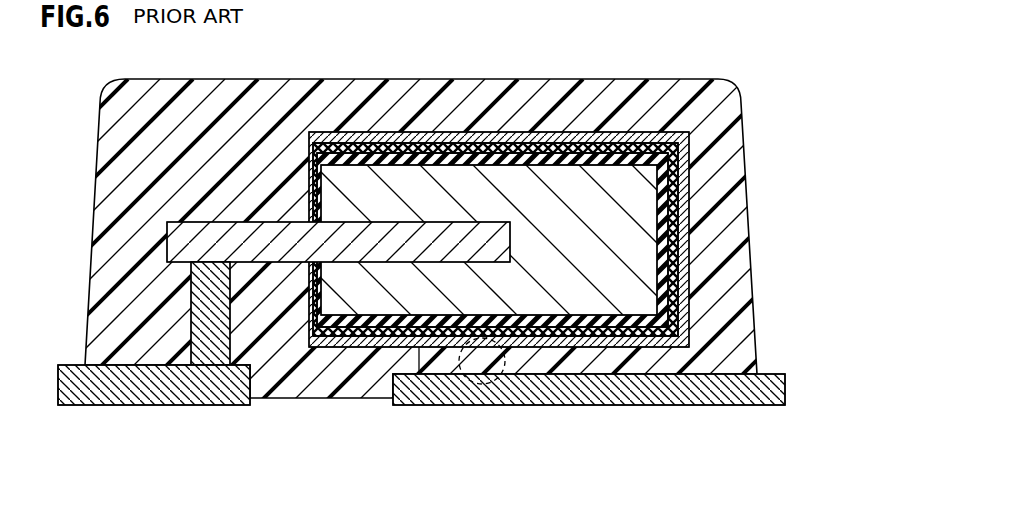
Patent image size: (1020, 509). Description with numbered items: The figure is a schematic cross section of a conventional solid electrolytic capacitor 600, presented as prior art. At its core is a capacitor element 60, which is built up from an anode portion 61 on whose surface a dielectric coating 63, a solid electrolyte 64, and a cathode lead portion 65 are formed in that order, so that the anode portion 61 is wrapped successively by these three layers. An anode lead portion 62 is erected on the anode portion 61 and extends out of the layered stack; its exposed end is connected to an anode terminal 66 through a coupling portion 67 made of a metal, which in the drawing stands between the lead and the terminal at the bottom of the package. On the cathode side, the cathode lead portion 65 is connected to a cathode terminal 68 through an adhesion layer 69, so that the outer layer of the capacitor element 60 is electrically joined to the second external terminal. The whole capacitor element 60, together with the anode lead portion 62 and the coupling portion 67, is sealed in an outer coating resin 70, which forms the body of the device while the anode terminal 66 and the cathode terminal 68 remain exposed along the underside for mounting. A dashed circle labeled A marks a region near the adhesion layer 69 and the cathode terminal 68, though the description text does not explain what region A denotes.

The solid electrolytic capacitor 600 is at (733, 41).
The outer coating resin 70 is at (103, 185).
The capacitor element 60 is at (528, 239).
The cathode lead portion 65 is at (687, 160).
The solid electrolyte 64 is at (673, 190).
The dielectric coating 63 is at (663, 215).
The anode lead portion 62 is at (495, 246).
The anode portion 61 is at (643, 275).
The coupling portion 67 is at (203, 312).
The anode terminal 66 is at (82, 390).
The cathode terminal 68 is at (422, 392).
The adhesion layer 69 is at (420, 358).
The region A is at (500, 380).